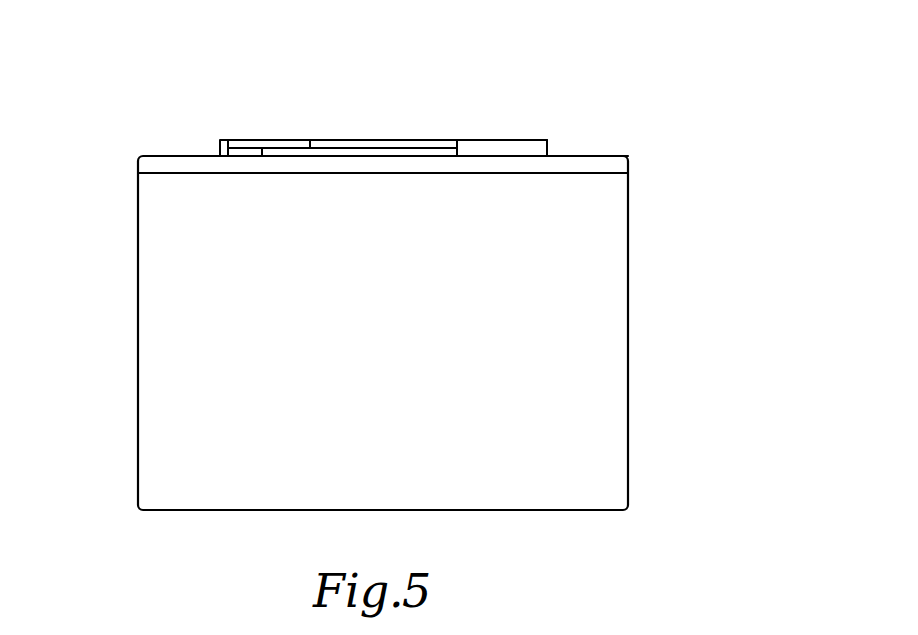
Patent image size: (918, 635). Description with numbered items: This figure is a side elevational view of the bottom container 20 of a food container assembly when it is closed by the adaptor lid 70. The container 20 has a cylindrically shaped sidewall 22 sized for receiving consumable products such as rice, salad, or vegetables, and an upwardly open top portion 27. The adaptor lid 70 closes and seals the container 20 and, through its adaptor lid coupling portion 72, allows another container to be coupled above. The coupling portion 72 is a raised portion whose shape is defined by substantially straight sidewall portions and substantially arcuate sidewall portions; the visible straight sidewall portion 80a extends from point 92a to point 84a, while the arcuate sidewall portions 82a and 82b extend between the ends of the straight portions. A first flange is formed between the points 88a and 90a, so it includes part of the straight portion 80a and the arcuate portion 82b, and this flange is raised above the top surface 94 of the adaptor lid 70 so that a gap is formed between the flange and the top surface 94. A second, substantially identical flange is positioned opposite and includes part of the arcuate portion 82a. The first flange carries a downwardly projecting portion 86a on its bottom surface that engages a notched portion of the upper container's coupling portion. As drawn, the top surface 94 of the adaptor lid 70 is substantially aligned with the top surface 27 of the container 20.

The bottom container 20 is at (700, 307).
The sidewall 22 is at (167, 315).
The top portion 27 is at (152, 163).
The adaptor lid 70 is at (573, 97).
The adaptor lid coupling portion 72 is at (349, 116).
The top surface 94 is at (570, 157).
The arcuate sidewall portion 82b is at (218, 148).
The point 90a is at (230, 151).
The downwardly projecting portion 86a is at (254, 155).
The point 84a is at (313, 139).
The point 88a is at (388, 148).
The straight sidewall portion 80a is at (423, 150).
The point 92a is at (457, 138).
The arcuate sidewall portion 82a is at (513, 148).